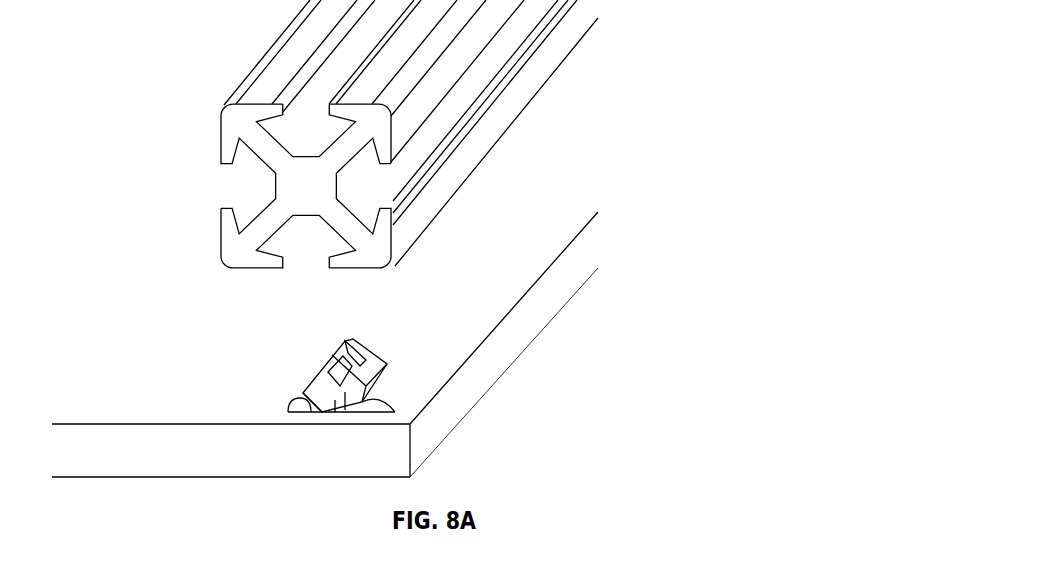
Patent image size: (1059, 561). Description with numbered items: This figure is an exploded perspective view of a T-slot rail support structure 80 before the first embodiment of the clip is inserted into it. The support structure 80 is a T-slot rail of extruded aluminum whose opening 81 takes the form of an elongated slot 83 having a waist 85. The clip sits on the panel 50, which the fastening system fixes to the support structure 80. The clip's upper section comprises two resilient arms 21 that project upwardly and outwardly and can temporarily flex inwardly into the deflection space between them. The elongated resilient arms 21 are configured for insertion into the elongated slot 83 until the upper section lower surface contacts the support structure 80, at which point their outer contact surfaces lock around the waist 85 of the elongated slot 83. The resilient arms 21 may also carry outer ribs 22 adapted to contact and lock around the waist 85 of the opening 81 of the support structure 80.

The support structure 80 is at (409, 213).
The opening 81 is at (409, 163).
The elongated slot 83 is at (398, 169).
The waist 85 is at (386, 209).
The panel 50 is at (568, 275).
The outer ribs 22 is at (350, 409).
The resilient arms 21 is at (362, 367).